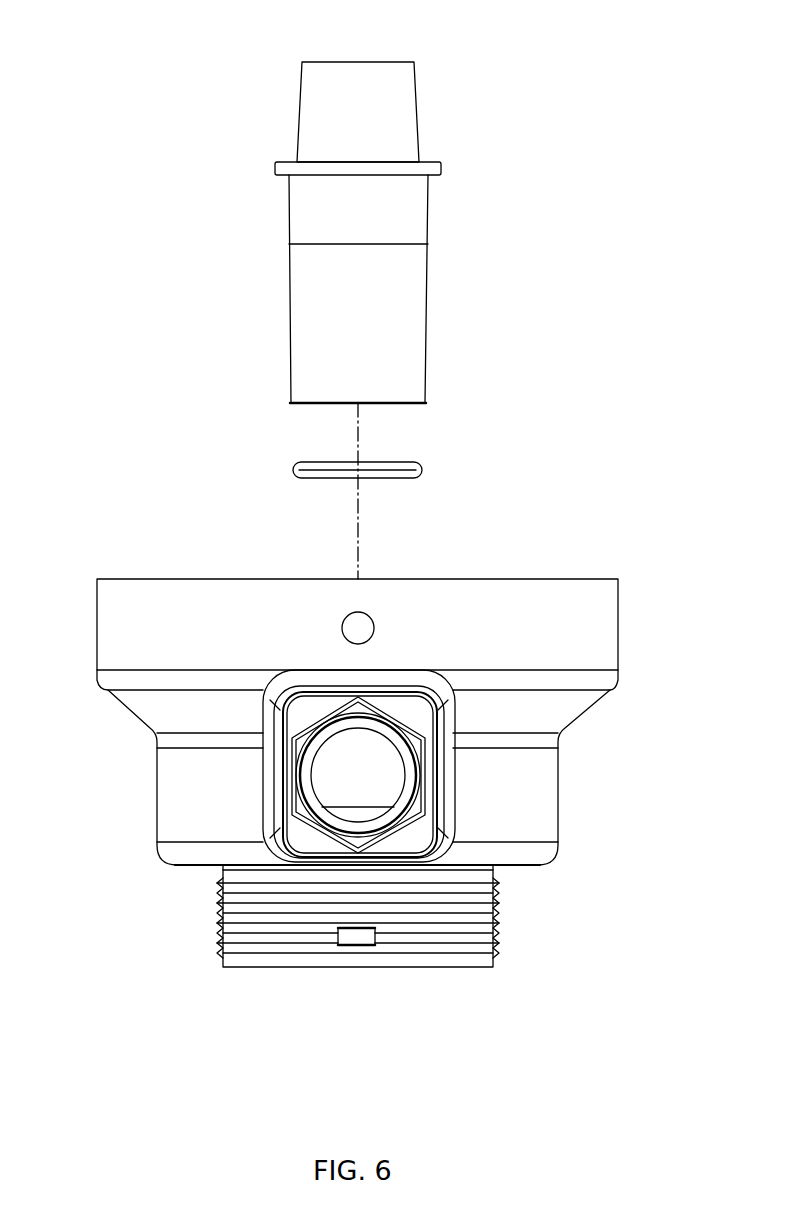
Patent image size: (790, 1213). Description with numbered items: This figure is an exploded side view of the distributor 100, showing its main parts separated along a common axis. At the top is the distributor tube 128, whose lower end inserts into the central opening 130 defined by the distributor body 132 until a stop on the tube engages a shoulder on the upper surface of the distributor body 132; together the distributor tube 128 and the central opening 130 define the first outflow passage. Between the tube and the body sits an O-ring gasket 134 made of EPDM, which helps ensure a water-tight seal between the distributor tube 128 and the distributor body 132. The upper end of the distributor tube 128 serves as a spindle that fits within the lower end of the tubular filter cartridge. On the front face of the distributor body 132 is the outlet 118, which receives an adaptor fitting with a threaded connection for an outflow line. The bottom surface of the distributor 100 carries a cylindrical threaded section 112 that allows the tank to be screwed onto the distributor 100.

The distributor 100 is at (128, 108).
The distributor tube 128 is at (376, 315).
The O-ring gasket 134 is at (432, 467).
The distributor body 132 is at (535, 796).
The outlet 118 is at (358, 775).
The cylindrical threaded section 112 is at (500, 937).
The central opening 130 is at (373, 967).